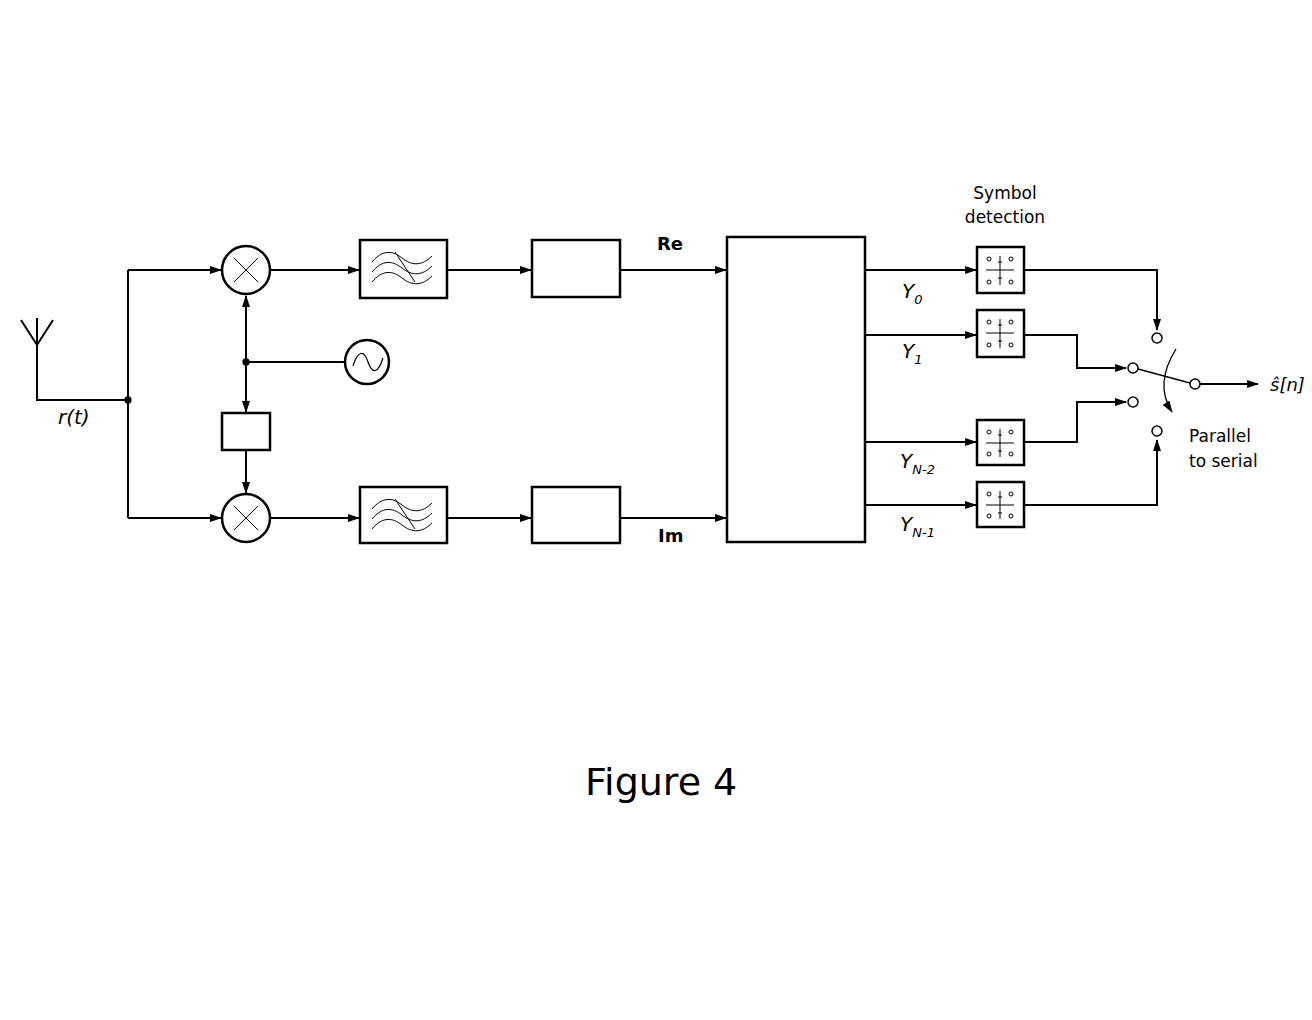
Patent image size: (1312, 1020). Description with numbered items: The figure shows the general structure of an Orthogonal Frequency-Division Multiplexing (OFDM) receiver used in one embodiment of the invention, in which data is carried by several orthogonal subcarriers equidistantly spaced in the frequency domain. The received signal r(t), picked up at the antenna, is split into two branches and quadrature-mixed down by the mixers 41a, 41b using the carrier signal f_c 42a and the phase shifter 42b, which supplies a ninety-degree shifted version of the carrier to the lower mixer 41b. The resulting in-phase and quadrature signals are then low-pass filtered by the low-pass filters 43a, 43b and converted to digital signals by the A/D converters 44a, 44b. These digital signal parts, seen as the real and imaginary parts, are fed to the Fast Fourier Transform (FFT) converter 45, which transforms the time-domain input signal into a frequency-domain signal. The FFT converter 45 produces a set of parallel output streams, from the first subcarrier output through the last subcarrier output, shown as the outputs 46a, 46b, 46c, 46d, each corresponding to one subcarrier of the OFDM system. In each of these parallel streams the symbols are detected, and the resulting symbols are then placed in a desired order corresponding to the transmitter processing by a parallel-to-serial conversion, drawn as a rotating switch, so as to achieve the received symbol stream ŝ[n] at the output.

The quadrature mixer 41a is at (246, 246).
The quadrature mixer 41b is at (246, 542).
The carrier signal f_c 42a is at (381, 379).
The phase shifter 42b is at (222, 416).
The low-pass filter 43a is at (402, 240).
The low-pass filter 43b is at (402, 543).
The A/D converter 44a is at (572, 240).
The A/D converter 44b is at (574, 543).
The Fast Fourier Transform (FFT) converter 45 is at (793, 237).
The output Y_0 46a is at (977, 251).
The output Y_1 46b is at (1024, 320).
The output Y_N-2 46c is at (977, 424).
The output Y_N-1 46d is at (1005, 527).